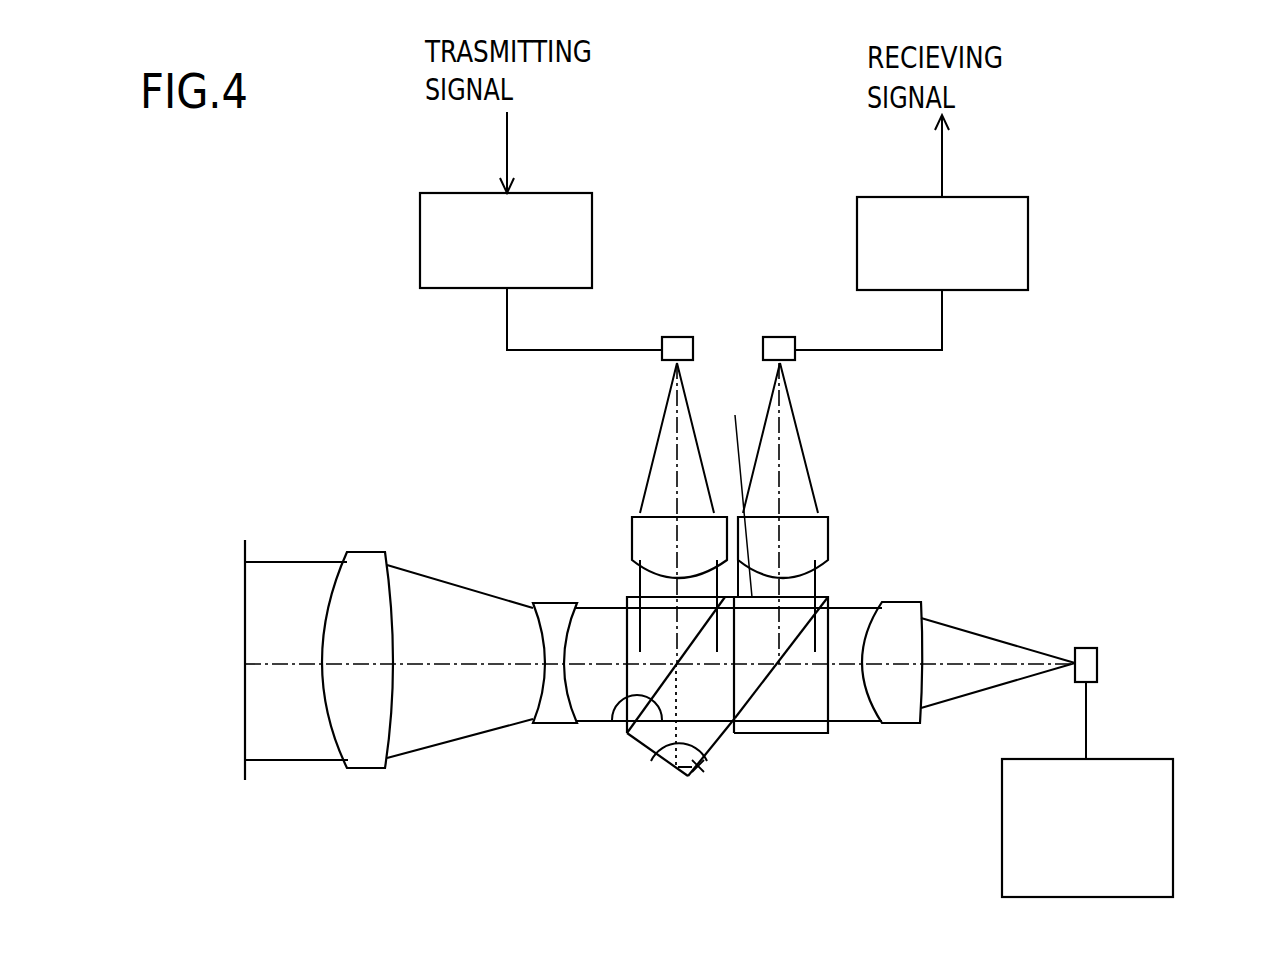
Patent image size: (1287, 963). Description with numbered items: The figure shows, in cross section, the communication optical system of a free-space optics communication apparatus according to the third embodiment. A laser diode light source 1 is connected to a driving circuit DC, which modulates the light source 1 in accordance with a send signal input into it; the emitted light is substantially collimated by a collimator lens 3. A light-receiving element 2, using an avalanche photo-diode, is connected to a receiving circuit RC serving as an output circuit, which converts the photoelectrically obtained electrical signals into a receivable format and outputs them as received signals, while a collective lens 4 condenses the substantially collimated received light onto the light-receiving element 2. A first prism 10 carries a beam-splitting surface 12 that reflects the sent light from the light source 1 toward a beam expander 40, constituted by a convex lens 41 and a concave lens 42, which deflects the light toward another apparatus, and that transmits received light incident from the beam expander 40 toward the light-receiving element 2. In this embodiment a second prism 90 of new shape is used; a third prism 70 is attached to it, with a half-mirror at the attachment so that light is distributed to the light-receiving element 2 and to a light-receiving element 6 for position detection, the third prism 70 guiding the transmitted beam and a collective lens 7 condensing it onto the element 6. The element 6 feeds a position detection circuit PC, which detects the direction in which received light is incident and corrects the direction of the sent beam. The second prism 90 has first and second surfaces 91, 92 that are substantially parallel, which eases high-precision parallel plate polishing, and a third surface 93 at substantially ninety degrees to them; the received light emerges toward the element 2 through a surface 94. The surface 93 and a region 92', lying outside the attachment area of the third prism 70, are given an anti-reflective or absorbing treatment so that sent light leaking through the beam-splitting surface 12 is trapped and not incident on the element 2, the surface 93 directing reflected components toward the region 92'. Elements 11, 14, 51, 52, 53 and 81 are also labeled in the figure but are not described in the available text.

The laser diode light source 1 is at (662, 346).
The light-receiving element 2 is at (795, 346).
The collimator lens 3 is at (632, 532).
The collective lens 4 is at (828, 532).
The light-receiving element for position detection 6 is at (1087, 647).
The collective lens 7 is at (902, 601).
The first prism 10 is at (625, 605).
The light beam path 11 is at (593, 604).
The beam-splitting surface 12 is at (616, 706).
The window portion 14 is at (642, 596).
The beam expander 40 is at (449, 715).
The convex lens 41 is at (365, 770).
The concave lens 42 is at (545, 713).
The transmitting light beam 51 is at (675, 432).
The receiving light beam 52 is at (781, 432).
The optical axis 53 is at (452, 662).
The third prism 70 is at (848, 723).
The apex portion 81 is at (688, 778).
The second prism 90 is at (788, 625).
The first surface 91 is at (656, 754).
The second surface 92 is at (781, 702).
The region 92' is at (724, 767).
The third surface 93 is at (715, 773).
The surface 94 is at (736, 491).
The driving circuit DC is at (573, 197).
The receiving circuit RC is at (972, 200).
The position detection circuit PC is at (1173, 828).